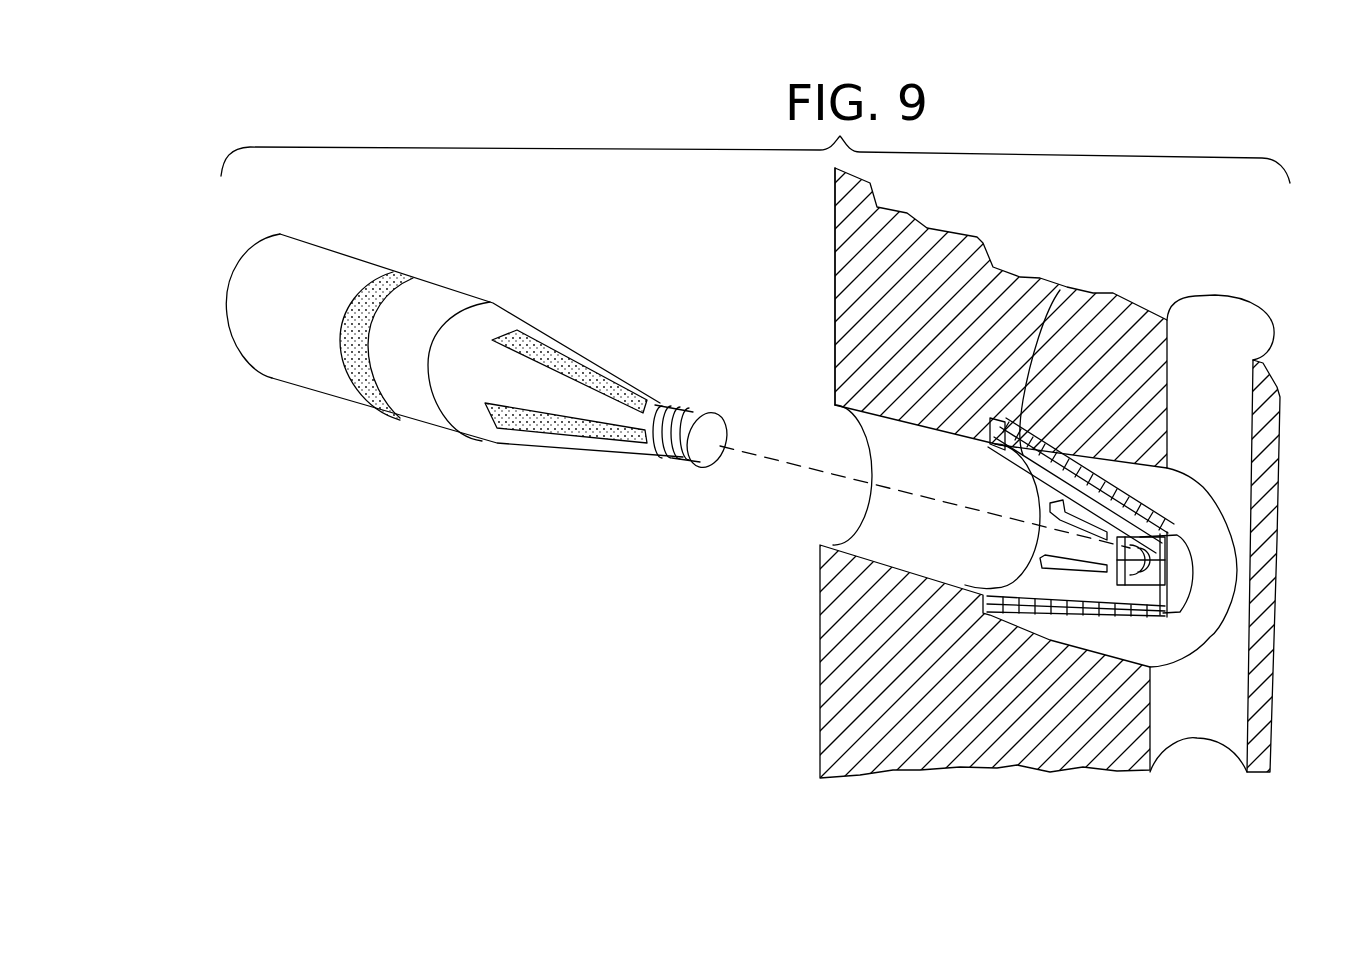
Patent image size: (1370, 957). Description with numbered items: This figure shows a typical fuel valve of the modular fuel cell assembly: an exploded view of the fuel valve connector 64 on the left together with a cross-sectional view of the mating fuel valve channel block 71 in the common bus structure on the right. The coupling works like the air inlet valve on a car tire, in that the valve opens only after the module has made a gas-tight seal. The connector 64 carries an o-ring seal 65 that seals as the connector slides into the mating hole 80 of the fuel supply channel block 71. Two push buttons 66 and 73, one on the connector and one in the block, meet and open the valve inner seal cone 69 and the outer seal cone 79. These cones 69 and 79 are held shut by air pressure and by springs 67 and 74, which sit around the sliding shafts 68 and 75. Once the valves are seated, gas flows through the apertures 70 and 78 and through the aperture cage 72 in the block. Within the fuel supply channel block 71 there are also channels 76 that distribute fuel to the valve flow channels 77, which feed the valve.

The fuel valve connector 64 is at (508, 283).
The o-ring seal 65 is at (400, 272).
The push button 66 is at (703, 411).
The spring 67 is at (676, 460).
The sliding shaft 68 is at (660, 455).
The valve inner seal cone 69 is at (577, 445).
The aperture 70 is at (505, 440).
The fuel valve channel block 71 is at (870, 802).
The aperture cage 72 is at (970, 580).
The push button 73 is at (1033, 580).
The spring 74 is at (1132, 610).
The sliding shaft 75 is at (1165, 570).
The channel 76 is at (1217, 720).
The valve flow channel 77 is at (1147, 497).
The aperture 78 is at (1020, 492).
The outer seal cone 79 is at (1060, 289).
The mating hole 80 is at (890, 422).